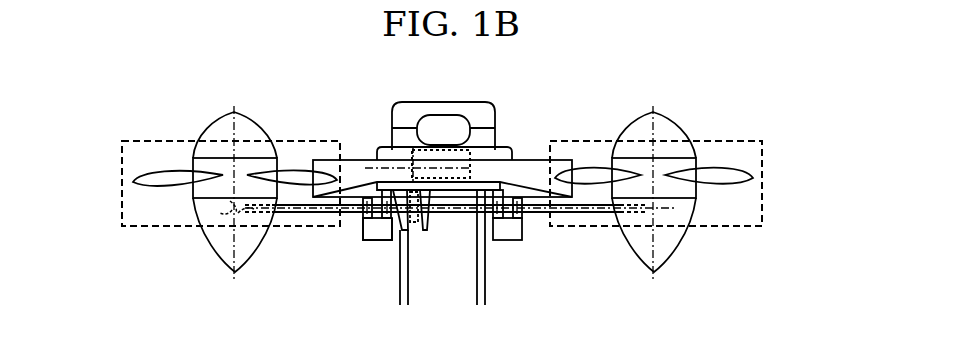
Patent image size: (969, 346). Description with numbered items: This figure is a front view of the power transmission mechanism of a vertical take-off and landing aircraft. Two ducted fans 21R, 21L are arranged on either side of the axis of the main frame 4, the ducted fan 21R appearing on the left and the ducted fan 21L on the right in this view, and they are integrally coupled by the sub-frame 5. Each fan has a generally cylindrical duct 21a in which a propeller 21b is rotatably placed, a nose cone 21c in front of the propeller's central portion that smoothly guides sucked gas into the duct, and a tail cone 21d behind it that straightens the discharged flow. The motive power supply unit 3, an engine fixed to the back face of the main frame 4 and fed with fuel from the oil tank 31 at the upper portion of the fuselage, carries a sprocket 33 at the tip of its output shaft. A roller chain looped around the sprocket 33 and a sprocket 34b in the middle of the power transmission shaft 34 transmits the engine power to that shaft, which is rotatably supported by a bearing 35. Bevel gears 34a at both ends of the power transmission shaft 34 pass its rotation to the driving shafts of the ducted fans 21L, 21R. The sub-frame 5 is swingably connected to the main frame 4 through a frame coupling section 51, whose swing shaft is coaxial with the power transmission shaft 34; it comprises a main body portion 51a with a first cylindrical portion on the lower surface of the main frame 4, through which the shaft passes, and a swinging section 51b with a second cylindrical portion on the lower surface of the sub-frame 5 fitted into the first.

The ducted fan 21R is at (132, 128).
The ducted fan 21L is at (750, 128).
The duct 21a is at (592, 140).
The propeller 21b is at (759, 173).
The nose cone 21c is at (210, 130).
The tail cone 21d is at (222, 255).
The motive power supply unit 3 is at (401, 146).
The oil tank 31 is at (433, 139).
The sprocket 33 is at (410, 167).
The sub-frame 5 is at (530, 160).
The power transmission shaft 34 is at (307, 214).
The bevel gear 34a is at (233, 208).
The sprocket 34b is at (411, 233).
The bearing 35 is at (427, 233).
The main frame 4 is at (459, 200).
The frame coupling section 51 is at (357, 250).
The main body portion 51a is at (380, 241).
The swinging section 51b is at (363, 220).